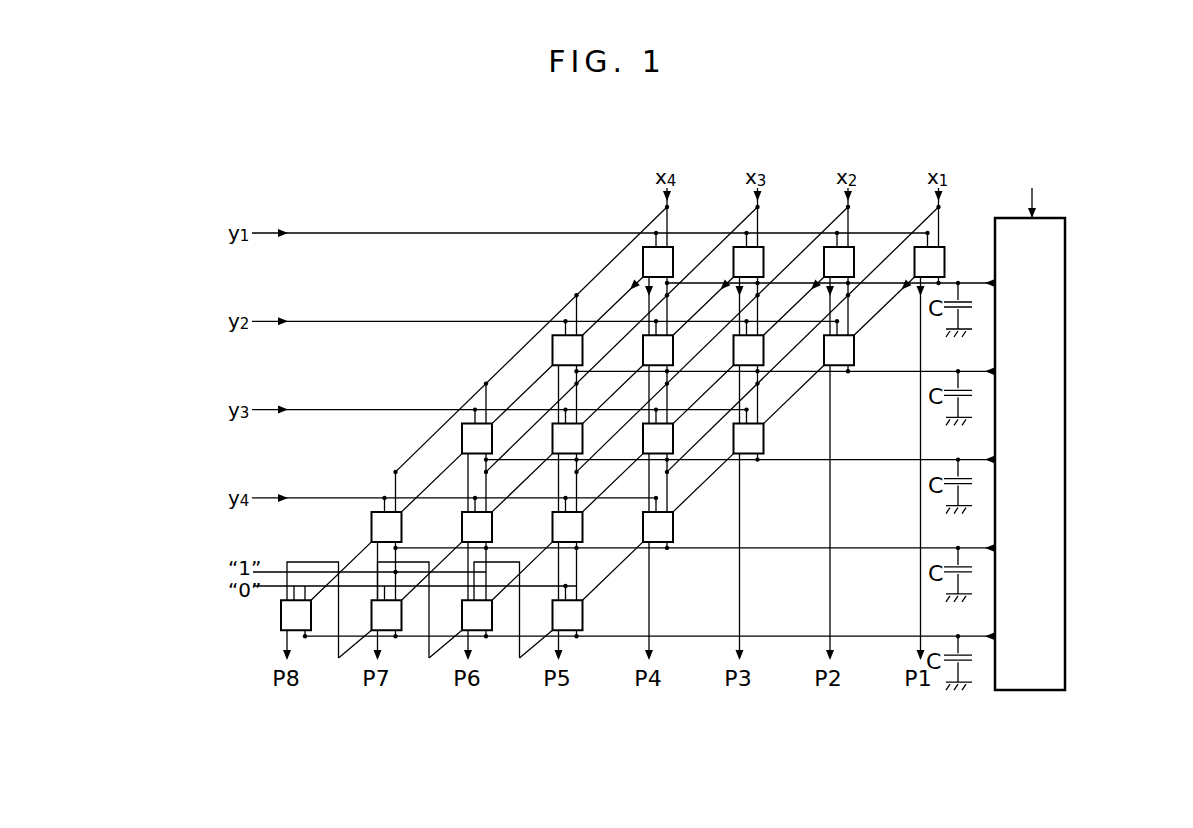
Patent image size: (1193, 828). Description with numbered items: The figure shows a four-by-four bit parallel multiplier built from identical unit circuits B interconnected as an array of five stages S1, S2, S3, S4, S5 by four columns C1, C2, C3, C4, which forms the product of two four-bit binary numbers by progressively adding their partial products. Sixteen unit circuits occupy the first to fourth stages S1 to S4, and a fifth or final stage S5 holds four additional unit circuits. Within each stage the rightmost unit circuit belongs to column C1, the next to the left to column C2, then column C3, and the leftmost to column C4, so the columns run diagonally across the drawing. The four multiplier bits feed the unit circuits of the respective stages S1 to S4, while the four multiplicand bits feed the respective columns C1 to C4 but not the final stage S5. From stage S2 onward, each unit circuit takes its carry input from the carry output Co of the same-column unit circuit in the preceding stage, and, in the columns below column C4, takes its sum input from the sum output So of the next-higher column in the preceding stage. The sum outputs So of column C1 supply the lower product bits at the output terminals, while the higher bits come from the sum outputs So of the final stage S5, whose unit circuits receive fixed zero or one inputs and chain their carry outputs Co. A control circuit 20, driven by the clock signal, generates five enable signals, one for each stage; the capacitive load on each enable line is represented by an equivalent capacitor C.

The control circuit 20 is at (1065, 233).
The column C1 is at (960, 228).
The column C2 is at (873, 220).
The column C3 is at (788, 217).
The column C4 is at (698, 217).
The first stage S1 is at (638, 258).
The second stage S2 is at (549, 349).
The third stage S3 is at (459, 437).
The fourth stage S4 is at (368, 525).
The fifth or final stage S5 is at (278, 614).
The carry output Co is at (880, 311).
The sum output So is at (921, 337).